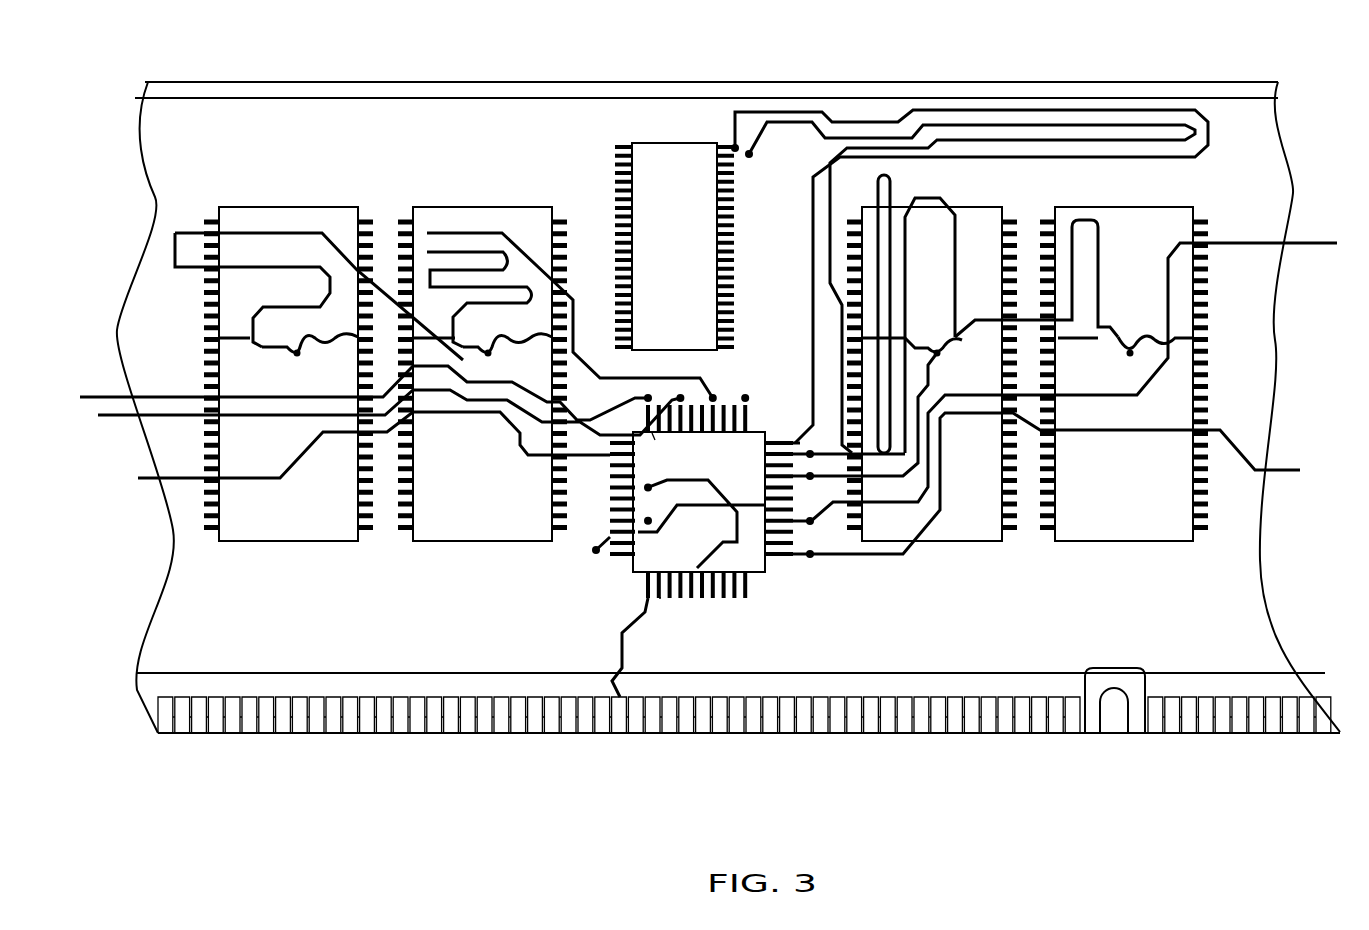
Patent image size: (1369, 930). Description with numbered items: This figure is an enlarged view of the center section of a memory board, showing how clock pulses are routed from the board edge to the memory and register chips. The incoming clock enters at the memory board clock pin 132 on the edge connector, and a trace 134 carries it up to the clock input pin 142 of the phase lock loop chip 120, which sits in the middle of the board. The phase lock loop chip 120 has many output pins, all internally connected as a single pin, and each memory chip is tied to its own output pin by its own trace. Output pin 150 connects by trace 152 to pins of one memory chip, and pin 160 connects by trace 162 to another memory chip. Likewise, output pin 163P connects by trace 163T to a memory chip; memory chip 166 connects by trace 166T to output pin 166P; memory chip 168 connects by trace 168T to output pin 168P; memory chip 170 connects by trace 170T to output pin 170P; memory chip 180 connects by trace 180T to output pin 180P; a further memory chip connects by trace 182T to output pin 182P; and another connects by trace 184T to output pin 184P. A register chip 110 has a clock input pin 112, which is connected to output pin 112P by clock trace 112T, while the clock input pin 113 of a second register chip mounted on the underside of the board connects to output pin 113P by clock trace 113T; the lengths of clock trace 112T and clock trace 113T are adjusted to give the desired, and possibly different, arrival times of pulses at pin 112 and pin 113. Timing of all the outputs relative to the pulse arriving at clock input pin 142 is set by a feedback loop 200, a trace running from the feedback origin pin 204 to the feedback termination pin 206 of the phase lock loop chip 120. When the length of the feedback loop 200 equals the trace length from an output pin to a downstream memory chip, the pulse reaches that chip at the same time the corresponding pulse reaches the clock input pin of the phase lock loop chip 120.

The register chip 110 is at (647, 160).
The clock input pin 112 is at (733, 146).
The clock trace 112T is at (958, 110).
The clock input pin 113 is at (749, 154).
The clock trace 113T is at (1172, 121).
The phase lock loop chip output pin 112P is at (765, 445).
The phase lock loop chip output pin 113P is at (746, 396).
The phase lock loop chip 120 is at (733, 577).
The memory board clock pin 132 is at (620, 735).
The trace 134 is at (615, 638).
The clock input pin 142 is at (660, 600).
The output pin 150 is at (608, 455).
The trace 152 is at (148, 480).
The pin 160 is at (662, 453).
The trace 162 is at (115, 417).
The trace 163T is at (80, 398).
The phase lock loop chip output pin 163P is at (681, 396).
The memory chip 166 is at (270, 207).
The trace 166T is at (302, 233).
The output pin 166P is at (703, 400).
The memory chip 168 is at (463, 207).
The trace 168T is at (480, 233).
The output pin 168P is at (714, 396).
The memory chip 170 is at (957, 542).
The trace 170T is at (932, 200).
The output pin 170P is at (812, 456).
The memory chip 180 is at (1130, 542).
The trace 180T is at (1099, 245).
The output pin 180P is at (812, 478).
The trace 182T is at (1250, 243).
The output pin 182P is at (812, 523).
The trace 184T is at (1300, 472).
The output pin 184P is at (812, 556).
The feedback loop 200 is at (767, 565).
The feedback origin pin 204 is at (594, 552).
The feedback termination pin 206 is at (698, 559).